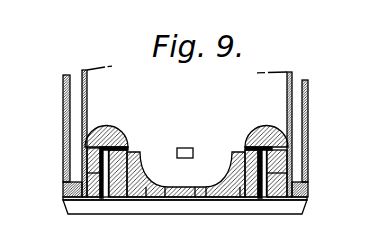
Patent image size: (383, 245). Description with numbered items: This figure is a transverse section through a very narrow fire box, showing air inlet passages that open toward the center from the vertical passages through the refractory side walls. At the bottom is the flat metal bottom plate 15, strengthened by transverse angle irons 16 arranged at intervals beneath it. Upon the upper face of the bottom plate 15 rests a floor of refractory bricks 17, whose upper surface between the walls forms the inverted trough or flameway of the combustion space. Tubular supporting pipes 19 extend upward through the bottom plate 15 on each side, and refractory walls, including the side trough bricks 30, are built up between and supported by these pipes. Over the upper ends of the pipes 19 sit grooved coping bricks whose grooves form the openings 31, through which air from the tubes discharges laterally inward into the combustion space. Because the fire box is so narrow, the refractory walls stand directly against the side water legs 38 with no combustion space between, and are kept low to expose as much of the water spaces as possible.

The side water legs 38 is at (72, 117).
The air openings 31 is at (129, 147).
The tubular supporting pipes 19 is at (287, 163).
The side trough bricks 30 is at (143, 197).
The refractory bricks 17 is at (190, 198).
The bottom plate 15 is at (235, 201).
The transverse angle irons 16 is at (285, 206).